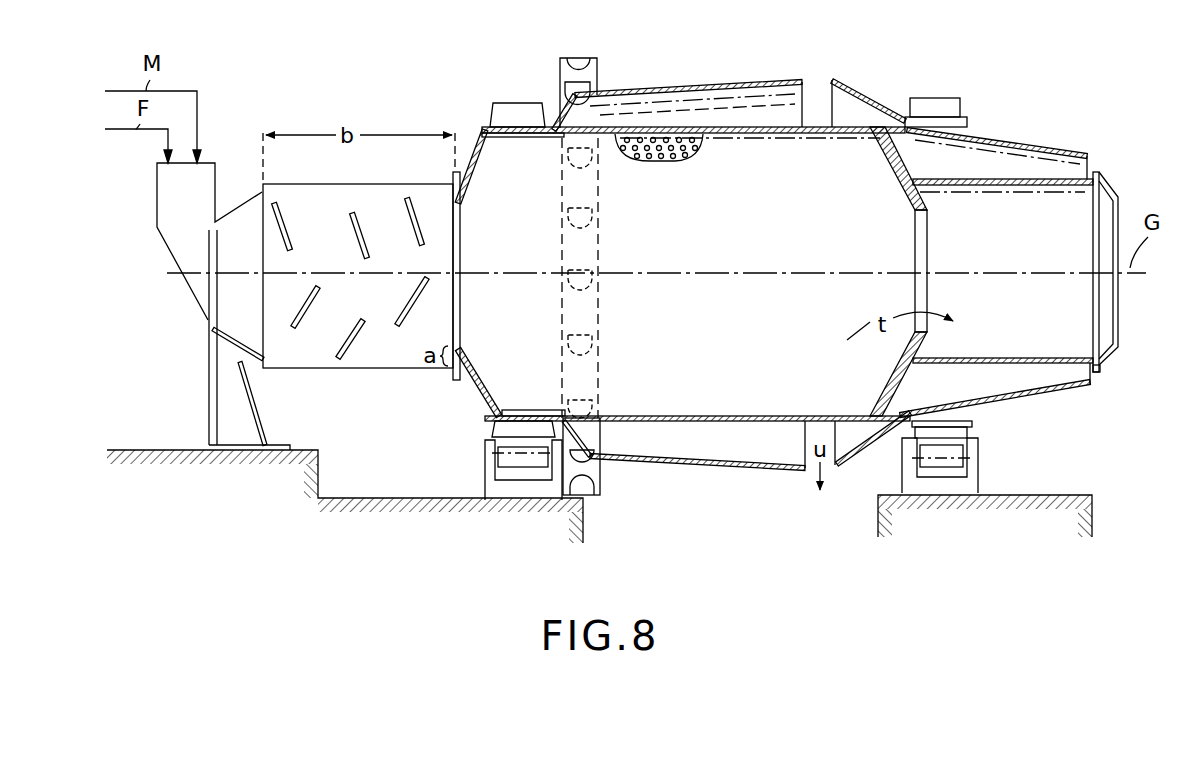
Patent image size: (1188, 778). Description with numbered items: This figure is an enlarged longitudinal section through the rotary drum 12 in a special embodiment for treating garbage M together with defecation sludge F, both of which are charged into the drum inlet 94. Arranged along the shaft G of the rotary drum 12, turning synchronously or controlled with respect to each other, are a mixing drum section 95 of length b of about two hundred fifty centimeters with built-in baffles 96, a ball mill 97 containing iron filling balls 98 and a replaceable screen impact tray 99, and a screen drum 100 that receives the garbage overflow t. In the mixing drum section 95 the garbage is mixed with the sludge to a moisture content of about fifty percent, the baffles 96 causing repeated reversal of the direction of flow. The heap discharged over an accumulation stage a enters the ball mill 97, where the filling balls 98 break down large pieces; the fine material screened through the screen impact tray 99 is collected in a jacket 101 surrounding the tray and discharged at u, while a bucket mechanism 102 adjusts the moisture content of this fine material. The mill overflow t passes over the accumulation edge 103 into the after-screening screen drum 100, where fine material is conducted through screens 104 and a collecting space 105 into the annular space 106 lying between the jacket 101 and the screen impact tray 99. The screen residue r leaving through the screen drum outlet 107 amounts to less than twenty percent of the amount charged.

The rotary drum 12 is at (819, 71).
The drum inlet 94 is at (170, 217).
The mixing drum section 95 is at (318, 355).
The baffles 96 is at (318, 290).
The ball mill 97 is at (500, 373).
The filling balls 98 is at (675, 157).
The screen impact tray 99 is at (697, 416).
The screen drum 100 is at (1033, 350).
The jacket 101 is at (688, 100).
The bucket mechanism 102 is at (588, 73).
The accumulation edge 103 is at (925, 345).
The screens 104 is at (992, 358).
The collecting space 105 is at (997, 386).
The annular space 106 is at (782, 453).
The screen drum outlet 107 is at (1112, 312).